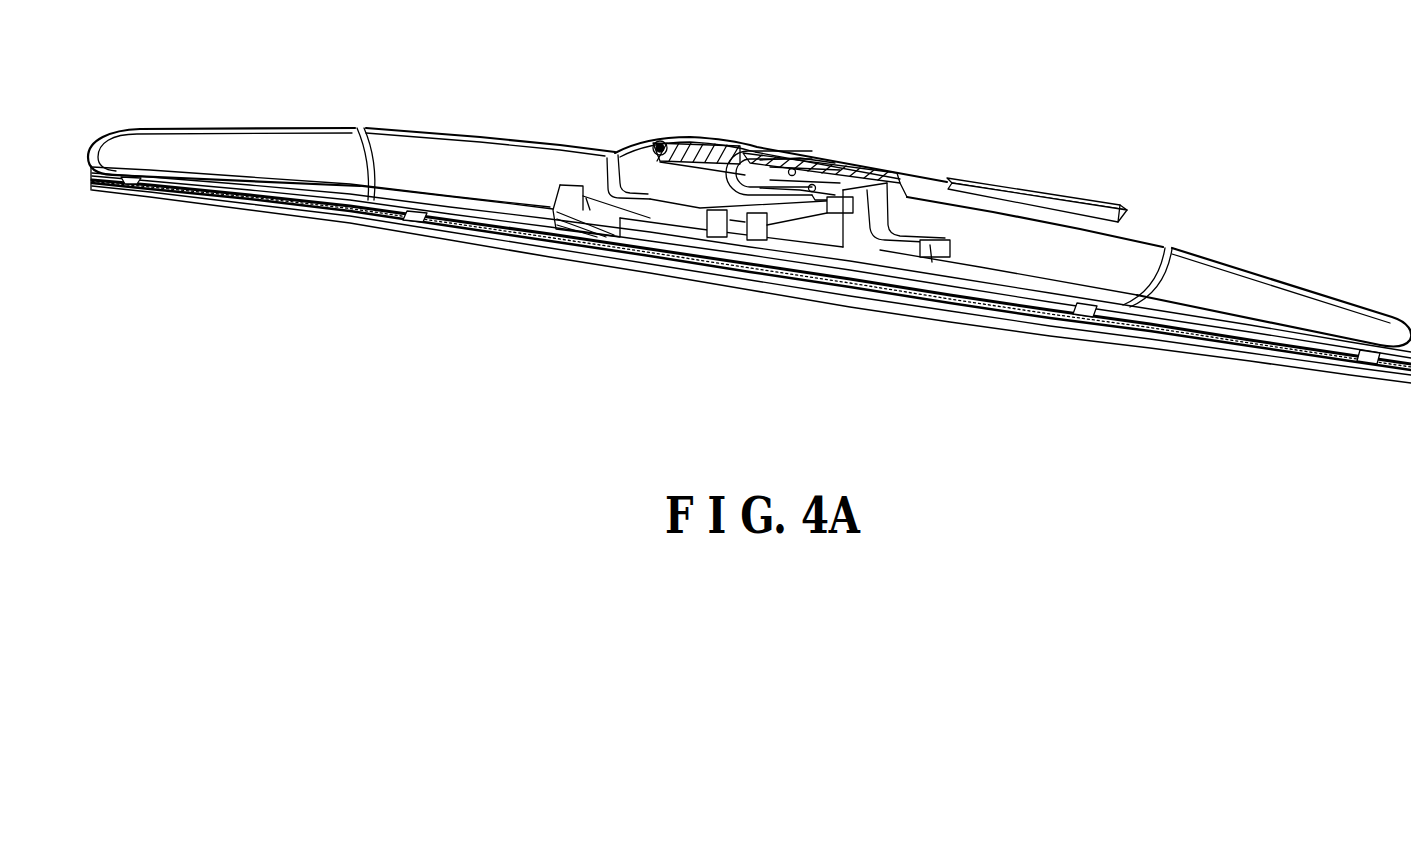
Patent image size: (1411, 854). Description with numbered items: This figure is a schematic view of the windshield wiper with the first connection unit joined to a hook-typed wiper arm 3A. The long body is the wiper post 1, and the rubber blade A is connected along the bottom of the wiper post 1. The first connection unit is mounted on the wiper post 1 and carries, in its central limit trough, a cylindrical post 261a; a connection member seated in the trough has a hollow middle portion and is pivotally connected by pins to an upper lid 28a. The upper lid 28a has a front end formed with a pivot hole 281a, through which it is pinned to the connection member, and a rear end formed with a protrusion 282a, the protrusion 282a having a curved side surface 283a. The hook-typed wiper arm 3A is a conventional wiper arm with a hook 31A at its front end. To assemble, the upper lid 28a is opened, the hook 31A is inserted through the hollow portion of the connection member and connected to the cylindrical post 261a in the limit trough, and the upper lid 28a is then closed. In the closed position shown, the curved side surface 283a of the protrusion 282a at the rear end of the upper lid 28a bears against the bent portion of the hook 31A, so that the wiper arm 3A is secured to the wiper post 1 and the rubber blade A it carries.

The wiper post 1 is at (1207, 273).
The rubber blade A is at (1199, 343).
The hook-typed wiper arm 3A is at (1032, 186).
The upper lid 28a is at (688, 145).
The pivot hole 281a is at (648, 142).
The protrusion 282a is at (722, 178).
The curved side surface 283a is at (737, 143).
The cylindrical post 261a is at (752, 182).
The hook 31A is at (803, 153).